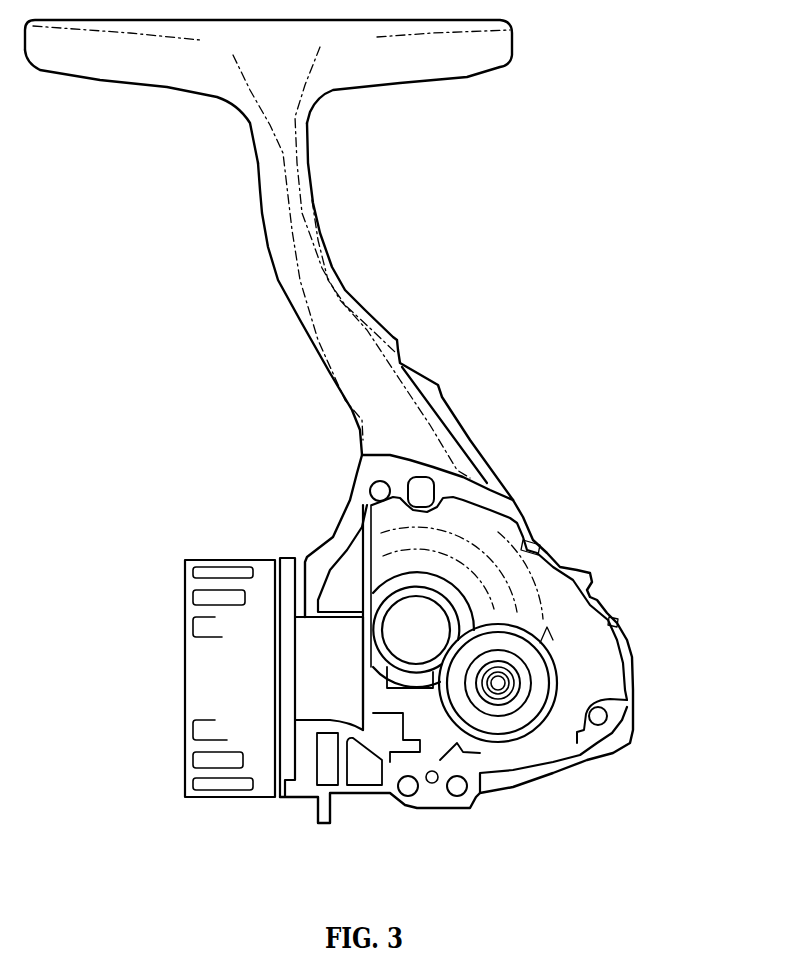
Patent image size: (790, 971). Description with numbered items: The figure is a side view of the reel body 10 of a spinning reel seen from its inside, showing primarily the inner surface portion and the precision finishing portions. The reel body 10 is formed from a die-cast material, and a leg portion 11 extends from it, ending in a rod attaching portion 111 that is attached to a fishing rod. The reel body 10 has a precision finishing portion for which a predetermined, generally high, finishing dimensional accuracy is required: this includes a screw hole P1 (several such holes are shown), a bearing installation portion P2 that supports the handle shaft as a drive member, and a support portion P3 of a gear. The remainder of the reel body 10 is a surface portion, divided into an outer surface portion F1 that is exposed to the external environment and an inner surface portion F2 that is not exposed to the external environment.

The rod attaching portion 111 is at (460, 62).
The reel body 10 is at (500, 333).
The leg portion 11 is at (407, 437).
The screw hole P1 is at (417, 487).
The bearing installation portion P2 is at (460, 597).
The support portion of a gear P3 is at (503, 703).
The outer surface portion F1 is at (230, 678).
The inner surface portion F2 is at (592, 653).